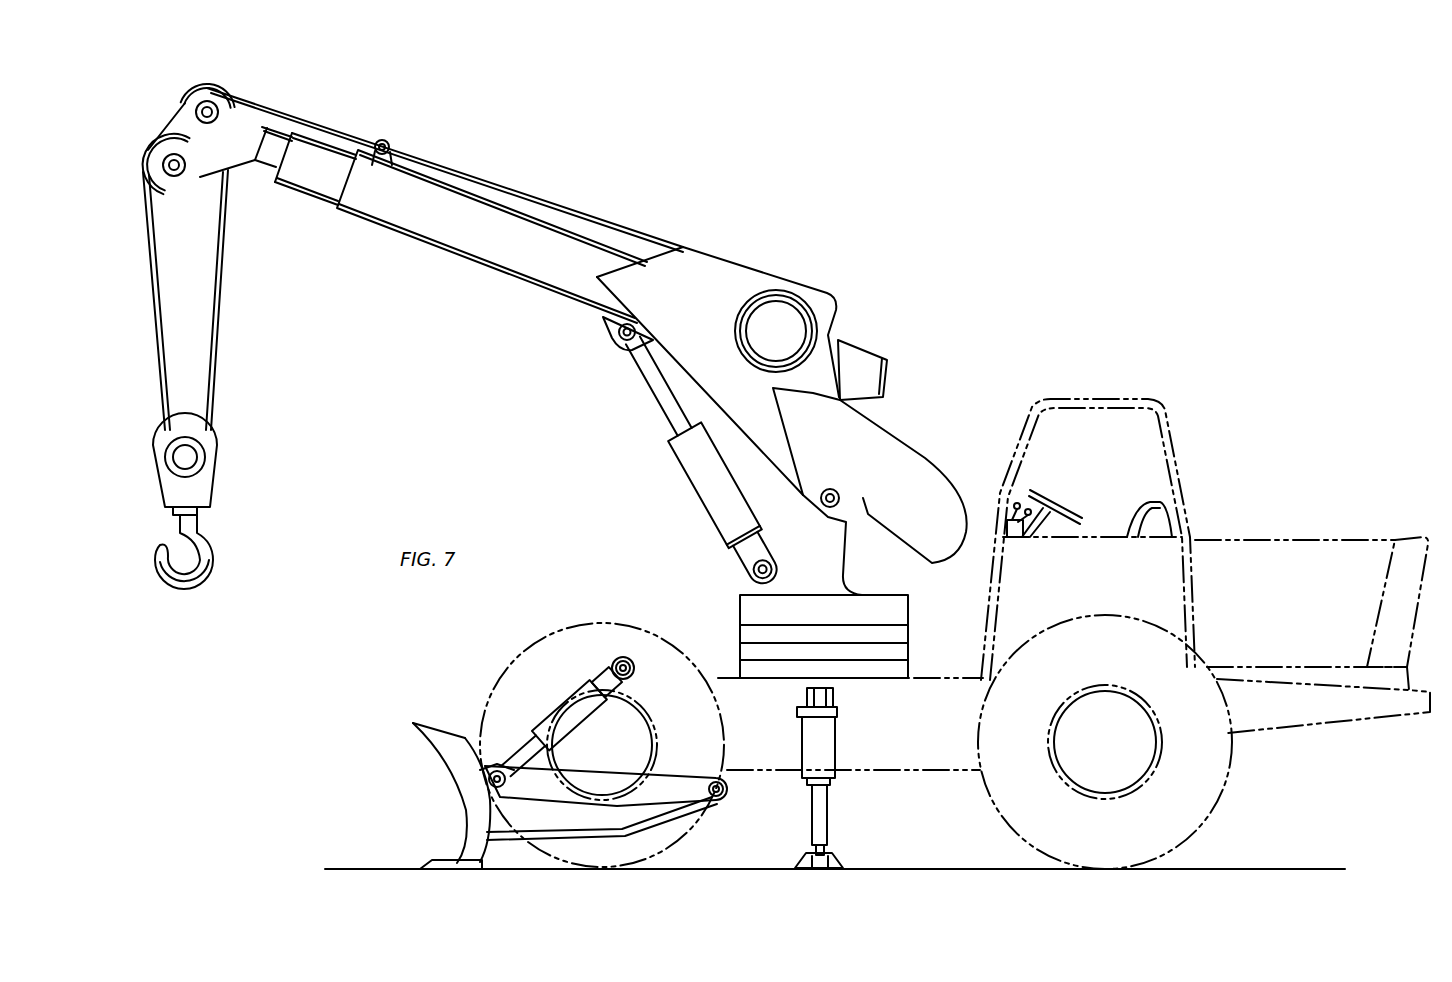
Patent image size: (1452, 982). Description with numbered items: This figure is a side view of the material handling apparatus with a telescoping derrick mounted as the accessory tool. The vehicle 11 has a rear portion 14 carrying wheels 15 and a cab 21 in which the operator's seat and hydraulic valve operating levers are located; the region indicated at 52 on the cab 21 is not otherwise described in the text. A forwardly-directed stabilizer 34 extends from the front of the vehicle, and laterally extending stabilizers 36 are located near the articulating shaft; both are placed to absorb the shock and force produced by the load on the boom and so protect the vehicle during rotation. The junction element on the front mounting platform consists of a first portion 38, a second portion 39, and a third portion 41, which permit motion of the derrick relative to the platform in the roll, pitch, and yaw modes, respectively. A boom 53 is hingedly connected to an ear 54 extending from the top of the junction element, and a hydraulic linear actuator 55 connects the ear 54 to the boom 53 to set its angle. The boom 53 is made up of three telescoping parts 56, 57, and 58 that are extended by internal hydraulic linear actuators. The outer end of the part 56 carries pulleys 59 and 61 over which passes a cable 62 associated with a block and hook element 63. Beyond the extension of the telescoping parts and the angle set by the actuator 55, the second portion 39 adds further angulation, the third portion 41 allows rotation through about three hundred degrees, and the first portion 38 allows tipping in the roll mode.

The vehicle 11 is at (1178, 520).
The rear portion 14 is at (1319, 556).
The wheels 15 is at (1217, 782).
The cab 21 is at (1173, 455).
The stabilizer 34 is at (466, 810).
The stabilizers 36 is at (820, 807).
The first portion 38 is at (902, 672).
The second portion 39 is at (900, 653).
The third portion 41 is at (900, 633).
The cab enclosure 52 is at (1120, 400).
The boom 53 is at (780, 285).
The ear 54 is at (828, 563).
The hydraulic linear actuator 55 is at (690, 466).
The telescoping part 56 is at (270, 172).
The telescoping part 57 is at (335, 160).
The telescoping part 58 is at (440, 197).
The pulley 59 is at (203, 86).
The pulley 61 is at (150, 142).
The cable 62 is at (155, 288).
The block and hook element 63 is at (205, 562).